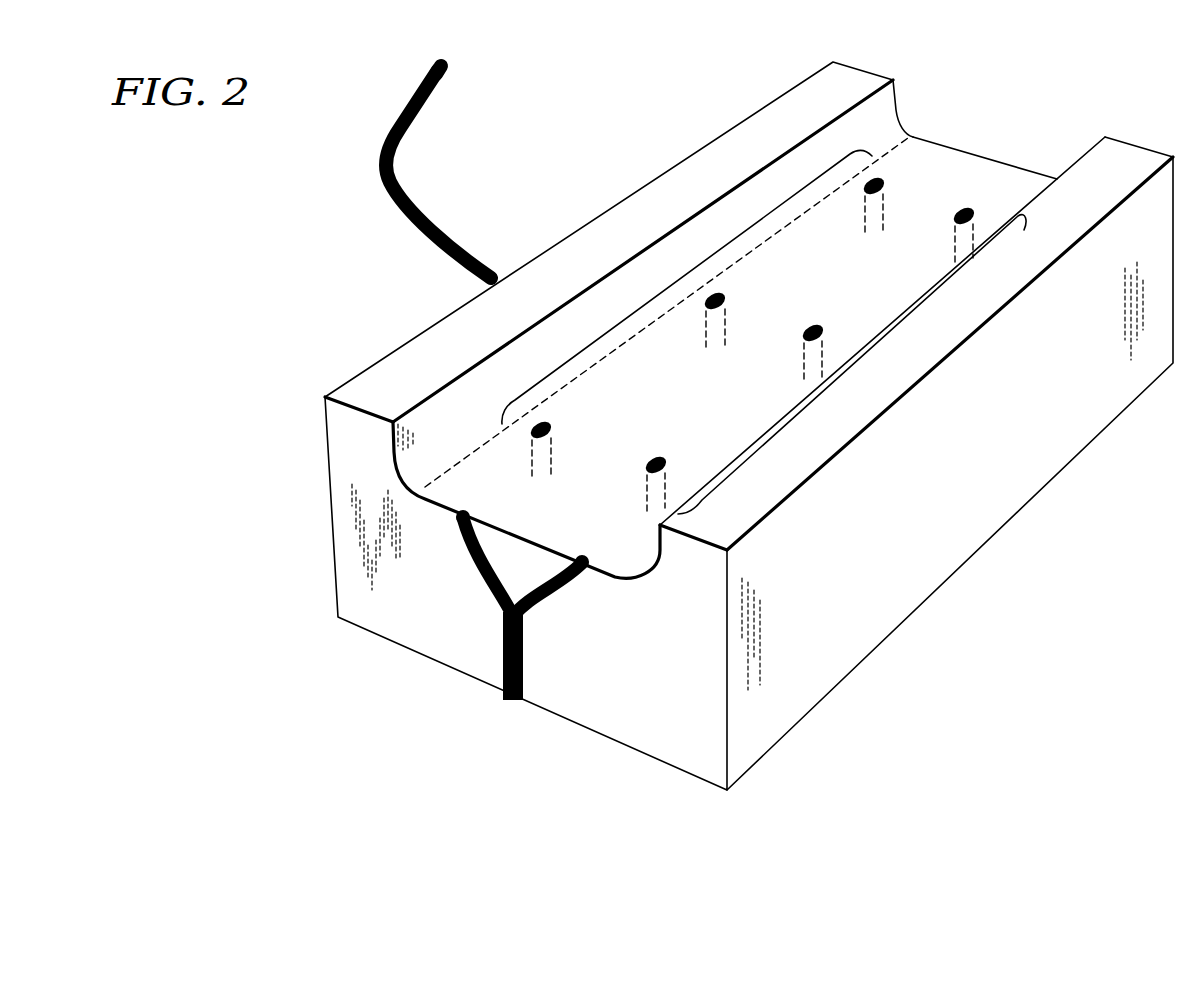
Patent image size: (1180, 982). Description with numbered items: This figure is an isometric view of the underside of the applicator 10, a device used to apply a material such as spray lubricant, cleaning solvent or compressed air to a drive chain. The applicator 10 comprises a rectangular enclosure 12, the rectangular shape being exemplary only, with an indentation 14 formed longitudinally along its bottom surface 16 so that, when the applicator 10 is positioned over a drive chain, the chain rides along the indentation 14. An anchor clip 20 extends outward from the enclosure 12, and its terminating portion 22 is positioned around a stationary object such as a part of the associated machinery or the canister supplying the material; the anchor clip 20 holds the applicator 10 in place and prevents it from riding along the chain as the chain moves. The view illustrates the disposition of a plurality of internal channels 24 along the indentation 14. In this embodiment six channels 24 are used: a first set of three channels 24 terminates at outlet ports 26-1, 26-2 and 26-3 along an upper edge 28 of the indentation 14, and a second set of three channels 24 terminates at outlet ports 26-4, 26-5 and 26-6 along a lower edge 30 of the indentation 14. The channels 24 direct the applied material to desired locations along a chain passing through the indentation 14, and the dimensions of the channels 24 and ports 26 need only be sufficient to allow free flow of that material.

The applicator 10 is at (236, 233).
The rectangular enclosure 12 is at (345, 515).
The indentation 14 is at (965, 150).
The bottom surface 16 is at (402, 358).
The anchor clip 20 is at (388, 130).
The terminating portion 22 is at (446, 70).
The internal channels 24 is at (700, 266).
The outlet ports 26 is at (663, 730).
The outlet port 26-1 is at (560, 426).
The outlet port 26-2 is at (733, 298).
The outlet port 26-3 is at (886, 183).
The outlet port 26-4 is at (648, 470).
The outlet port 26-5 is at (805, 340).
The outlet port 26-6 is at (955, 222).
The upper edge 28 is at (913, 137).
The lower edge 30 is at (1001, 184).